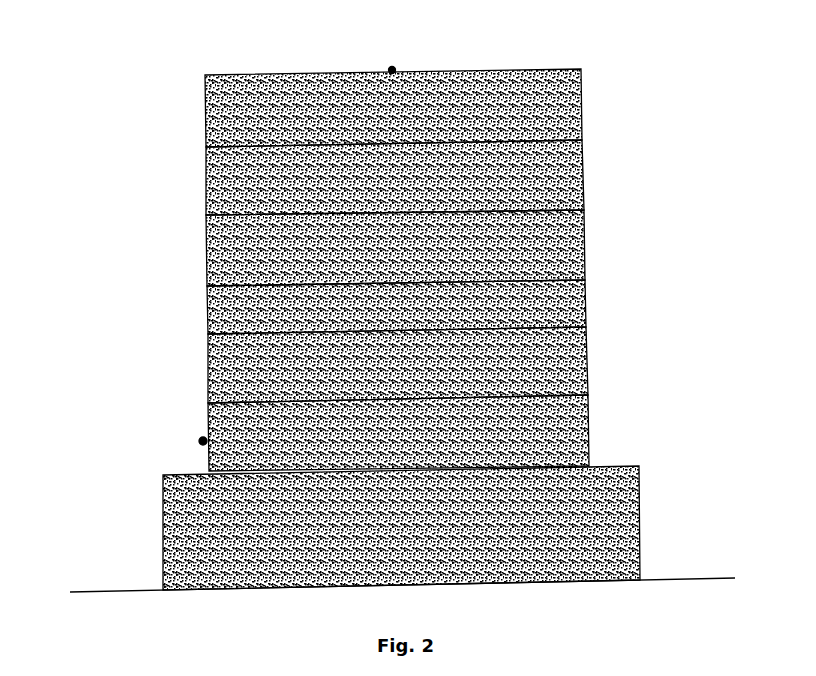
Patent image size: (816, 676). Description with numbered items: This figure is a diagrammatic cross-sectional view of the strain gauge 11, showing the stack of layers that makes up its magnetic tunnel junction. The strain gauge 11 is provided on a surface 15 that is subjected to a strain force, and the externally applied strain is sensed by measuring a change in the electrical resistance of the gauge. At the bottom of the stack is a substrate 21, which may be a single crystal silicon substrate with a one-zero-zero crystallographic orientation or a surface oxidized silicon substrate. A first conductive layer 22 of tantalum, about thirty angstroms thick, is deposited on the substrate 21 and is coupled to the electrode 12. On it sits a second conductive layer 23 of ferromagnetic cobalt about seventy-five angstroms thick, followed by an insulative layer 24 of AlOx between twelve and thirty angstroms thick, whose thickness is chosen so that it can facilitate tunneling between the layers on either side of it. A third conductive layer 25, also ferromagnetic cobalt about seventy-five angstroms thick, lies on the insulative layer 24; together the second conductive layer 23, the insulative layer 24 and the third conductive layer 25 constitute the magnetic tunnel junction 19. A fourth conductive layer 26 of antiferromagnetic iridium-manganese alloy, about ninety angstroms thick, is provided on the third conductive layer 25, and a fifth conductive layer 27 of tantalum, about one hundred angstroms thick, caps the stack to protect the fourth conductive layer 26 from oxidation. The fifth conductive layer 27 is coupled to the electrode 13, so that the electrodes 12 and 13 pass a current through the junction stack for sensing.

The strain gauge 11 is at (126, 150).
The electrode 12 is at (203, 441).
The electrode 13 is at (392, 70).
The surface 15 is at (100, 576).
The magnetic tunnel junction 19 is at (180, 238).
The substrate 21 is at (640, 513).
The first conductive layer 22 is at (588, 432).
The second conductive layer 23 is at (587, 362).
The insulative layer 24 is at (586, 305).
The third conductive layer 25 is at (585, 243).
The fourth conductive layer 26 is at (583, 175).
The fifth conductive layer 27 is at (582, 103).